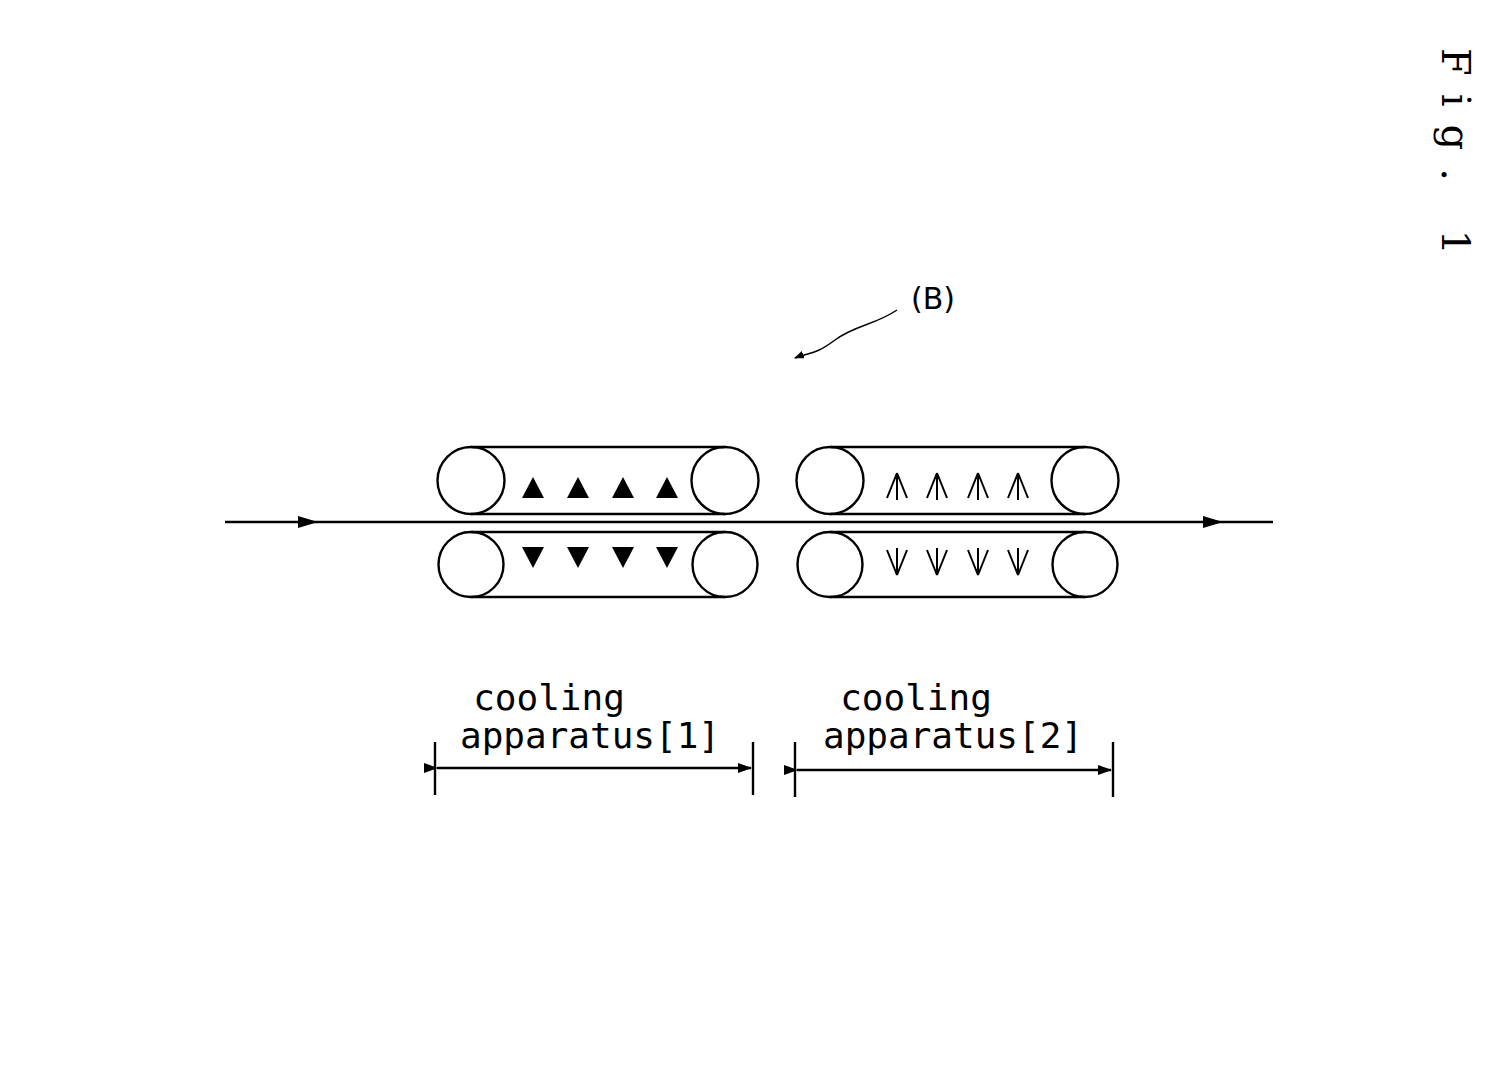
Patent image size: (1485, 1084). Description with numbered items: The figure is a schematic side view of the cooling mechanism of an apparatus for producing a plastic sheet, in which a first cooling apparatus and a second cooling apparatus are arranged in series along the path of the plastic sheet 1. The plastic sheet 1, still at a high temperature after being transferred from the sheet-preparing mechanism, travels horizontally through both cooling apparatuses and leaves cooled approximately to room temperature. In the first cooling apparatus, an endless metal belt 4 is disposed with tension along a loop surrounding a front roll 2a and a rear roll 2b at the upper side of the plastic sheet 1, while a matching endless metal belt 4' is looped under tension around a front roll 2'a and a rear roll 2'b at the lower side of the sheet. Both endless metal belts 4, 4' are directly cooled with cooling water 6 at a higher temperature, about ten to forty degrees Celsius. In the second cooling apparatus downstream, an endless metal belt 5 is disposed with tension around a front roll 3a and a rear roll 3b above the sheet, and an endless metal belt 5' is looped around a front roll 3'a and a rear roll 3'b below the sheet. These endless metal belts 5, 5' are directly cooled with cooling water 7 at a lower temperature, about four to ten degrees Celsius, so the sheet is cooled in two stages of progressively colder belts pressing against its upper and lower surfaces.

The plastic sheet 1 is at (368, 521).
The front roll 2a is at (470, 472).
The rear roll 2b is at (715, 462).
The front roll 2'a is at (447, 601).
The rear roll 2'b is at (759, 597).
The front roll 3a is at (830, 475).
The rear roll 3b is at (1077, 482).
The front roll 3'a is at (859, 597).
The rear roll 3'b is at (1140, 590).
The endless metal belt 4 is at (598, 443).
The endless metal belt 4' is at (598, 593).
The endless metal belt 5 is at (957, 442).
The endless metal belt 5' is at (957, 597).
The cooling water 6 is at (623, 477).
The cooling water 7 is at (1027, 478).